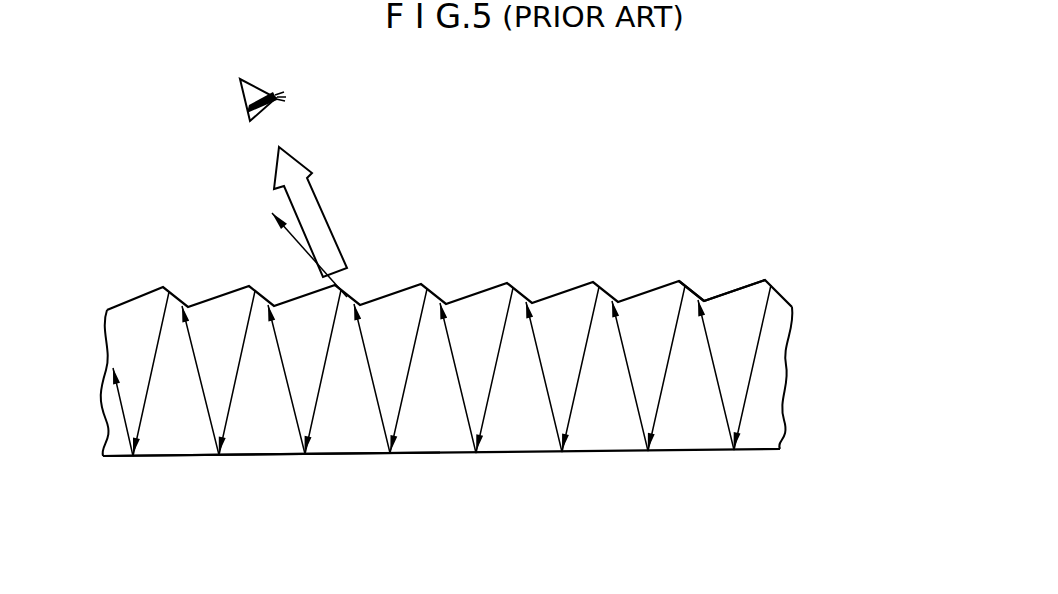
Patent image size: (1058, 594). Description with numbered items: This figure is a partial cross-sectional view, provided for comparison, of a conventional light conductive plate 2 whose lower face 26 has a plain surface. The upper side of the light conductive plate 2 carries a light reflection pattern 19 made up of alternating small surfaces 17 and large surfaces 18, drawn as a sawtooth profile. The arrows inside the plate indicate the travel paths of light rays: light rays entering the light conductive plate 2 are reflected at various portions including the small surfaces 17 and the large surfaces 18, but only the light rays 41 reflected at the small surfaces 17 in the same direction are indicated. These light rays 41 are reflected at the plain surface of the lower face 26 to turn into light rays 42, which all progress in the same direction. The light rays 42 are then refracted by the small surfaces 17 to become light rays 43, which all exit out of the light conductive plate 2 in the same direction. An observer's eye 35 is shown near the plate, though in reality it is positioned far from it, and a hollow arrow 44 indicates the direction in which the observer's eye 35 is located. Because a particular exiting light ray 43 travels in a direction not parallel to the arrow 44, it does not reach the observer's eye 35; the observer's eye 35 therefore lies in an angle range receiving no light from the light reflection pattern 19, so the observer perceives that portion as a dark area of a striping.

The light conductive plate 2 is at (770, 348).
The small surfaces 17 is at (700, 293).
The large surfaces 18 is at (742, 287).
The light reflection pattern 19 is at (797, 198).
The lower face 26 is at (681, 450).
The observer's eye 35 is at (238, 90).
The light rays 41 is at (403, 392).
The light rays 42 is at (365, 354).
The light rays 43 is at (293, 238).
The arrow 44 is at (293, 165).